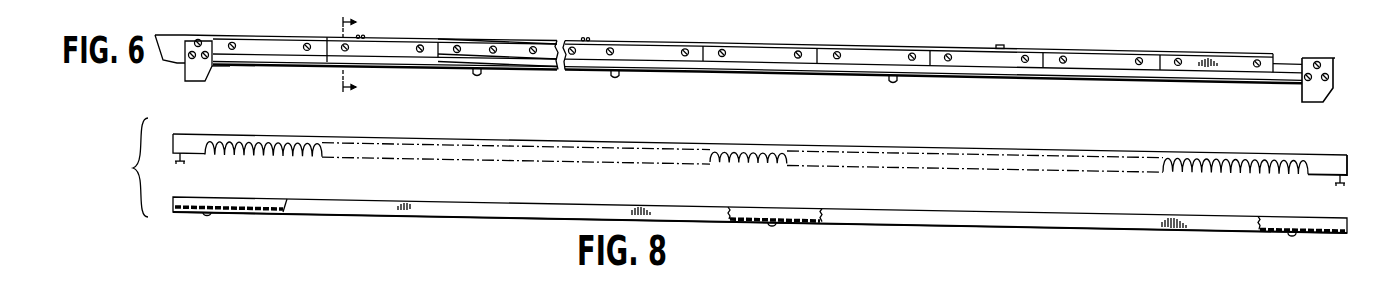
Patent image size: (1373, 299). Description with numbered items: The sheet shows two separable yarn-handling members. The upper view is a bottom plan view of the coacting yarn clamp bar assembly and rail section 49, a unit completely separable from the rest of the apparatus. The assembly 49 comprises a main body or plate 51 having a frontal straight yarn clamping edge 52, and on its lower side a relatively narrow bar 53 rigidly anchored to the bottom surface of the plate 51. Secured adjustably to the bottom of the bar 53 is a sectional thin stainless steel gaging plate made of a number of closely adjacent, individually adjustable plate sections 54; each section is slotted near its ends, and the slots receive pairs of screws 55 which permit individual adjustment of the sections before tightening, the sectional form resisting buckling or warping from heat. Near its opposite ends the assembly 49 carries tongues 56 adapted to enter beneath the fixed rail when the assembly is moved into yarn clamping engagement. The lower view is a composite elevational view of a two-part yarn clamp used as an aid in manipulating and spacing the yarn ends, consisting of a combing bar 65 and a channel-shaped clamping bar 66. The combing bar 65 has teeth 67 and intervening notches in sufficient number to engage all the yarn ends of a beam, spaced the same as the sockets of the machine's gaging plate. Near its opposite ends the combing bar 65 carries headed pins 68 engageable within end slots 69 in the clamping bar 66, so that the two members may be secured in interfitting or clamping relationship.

In FIG. 6, the yarn clamp bar assembly and rail section 49 is at (787, 44).
In FIG. 6, the main body or plate 51 is at (493, 46).
In FIG. 6, the yarn clamping edge 52 is at (505, 66).
In FIG. 6, the bar 53 is at (563, 48).
In FIG. 6, the plate sections 54 is at (332, 42).
In FIG. 6, the screws 55 is at (306, 49).
In FIG. 6, the tongues 56 is at (197, 72).
In FIG. 8, the combing bar 65 is at (760, 146).
In FIG. 8, the channel-shaped clamping bar 66 is at (441, 216).
In FIG. 8, the teeth 67 is at (280, 153).
In FIG. 8, the headed pins 68 is at (185, 157).
In FIG. 8, the end slots 69 is at (178, 212).